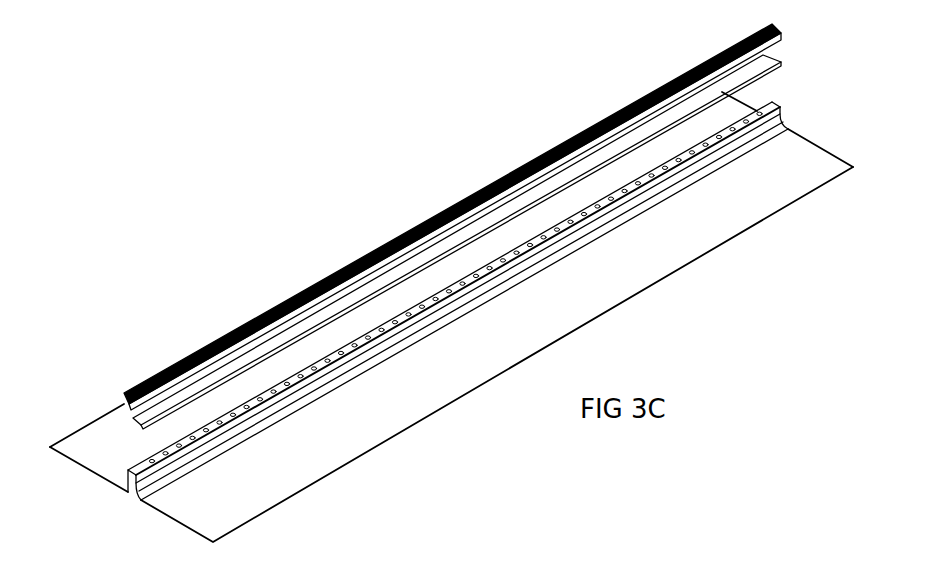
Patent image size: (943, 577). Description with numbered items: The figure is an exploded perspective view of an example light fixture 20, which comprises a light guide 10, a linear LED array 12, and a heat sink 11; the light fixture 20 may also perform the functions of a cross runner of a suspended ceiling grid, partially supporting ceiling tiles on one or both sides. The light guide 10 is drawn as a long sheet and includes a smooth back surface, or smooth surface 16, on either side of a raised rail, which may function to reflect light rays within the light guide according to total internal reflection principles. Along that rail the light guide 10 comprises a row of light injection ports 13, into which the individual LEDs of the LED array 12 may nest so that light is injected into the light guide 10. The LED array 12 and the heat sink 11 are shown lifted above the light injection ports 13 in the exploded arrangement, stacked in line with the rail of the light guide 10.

The light guide 10 is at (675, 325).
The heat sink 11 is at (782, 33).
The linear LED array 12 is at (760, 65).
The light injection ports 13 is at (153, 467).
The smooth surface 16 is at (120, 442).
The light fixture 20 is at (308, 196).